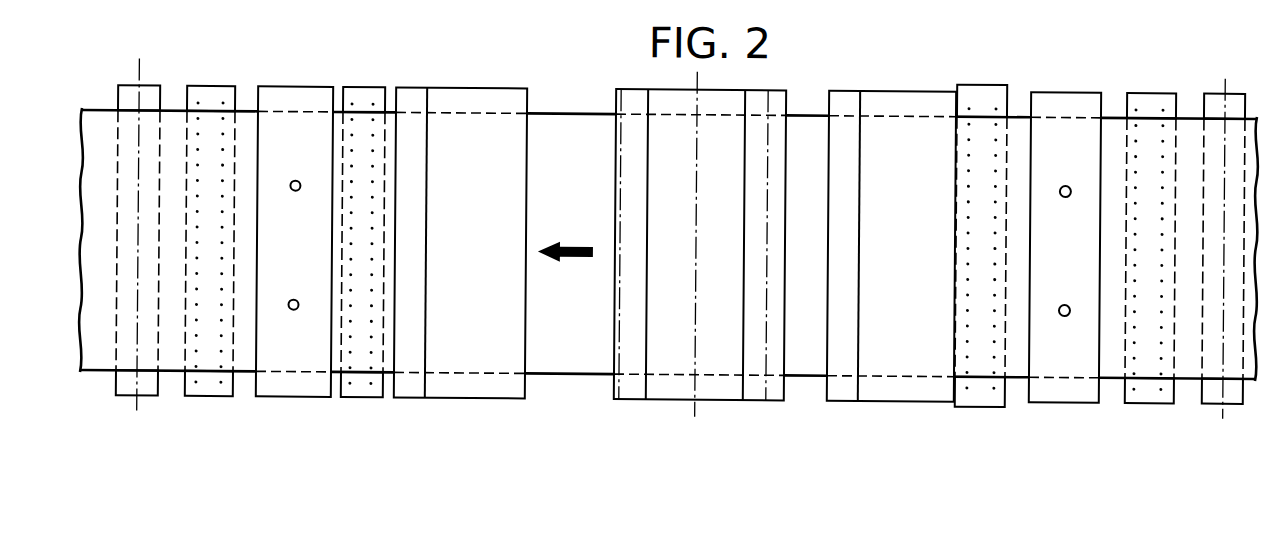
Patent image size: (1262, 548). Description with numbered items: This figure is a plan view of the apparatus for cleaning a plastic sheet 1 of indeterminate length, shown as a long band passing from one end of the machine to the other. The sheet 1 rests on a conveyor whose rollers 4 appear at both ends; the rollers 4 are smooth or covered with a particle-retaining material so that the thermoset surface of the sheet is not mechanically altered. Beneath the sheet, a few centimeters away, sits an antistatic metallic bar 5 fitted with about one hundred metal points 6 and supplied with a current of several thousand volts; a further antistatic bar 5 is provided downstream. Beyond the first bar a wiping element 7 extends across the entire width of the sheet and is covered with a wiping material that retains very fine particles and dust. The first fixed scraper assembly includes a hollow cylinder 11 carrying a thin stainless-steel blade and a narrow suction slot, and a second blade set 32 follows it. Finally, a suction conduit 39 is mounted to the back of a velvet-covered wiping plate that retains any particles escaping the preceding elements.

The plastic sheet 1 is at (567, 133).
The rollers 4 is at (127, 93).
The antistatic metallic bar 5 is at (208, 90).
The metal points 6 is at (1141, 99).
The wiping element 7 is at (1059, 92).
The hollow cylinder 11 is at (903, 94).
The treatment device 32 is at (469, 94).
The suction conduit 39 is at (292, 296).